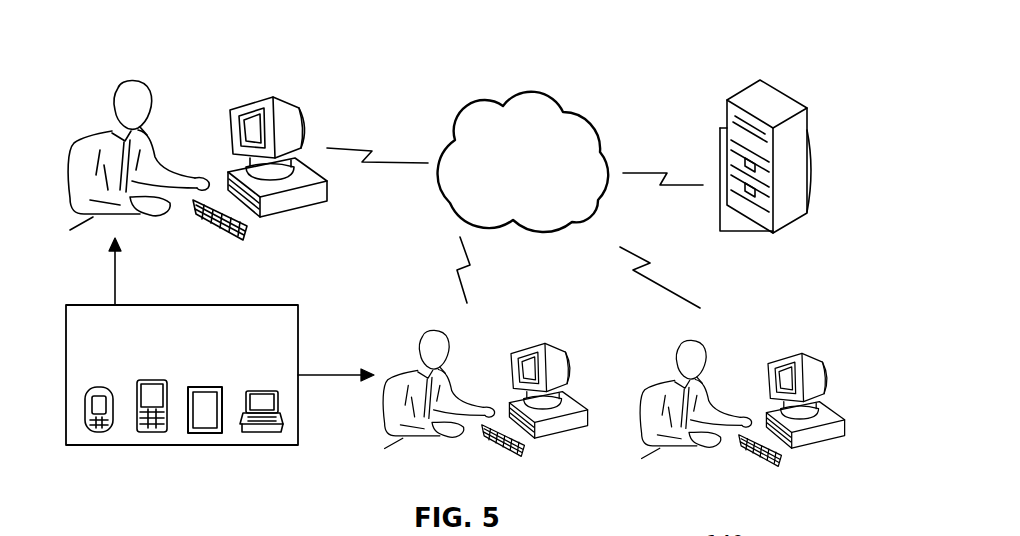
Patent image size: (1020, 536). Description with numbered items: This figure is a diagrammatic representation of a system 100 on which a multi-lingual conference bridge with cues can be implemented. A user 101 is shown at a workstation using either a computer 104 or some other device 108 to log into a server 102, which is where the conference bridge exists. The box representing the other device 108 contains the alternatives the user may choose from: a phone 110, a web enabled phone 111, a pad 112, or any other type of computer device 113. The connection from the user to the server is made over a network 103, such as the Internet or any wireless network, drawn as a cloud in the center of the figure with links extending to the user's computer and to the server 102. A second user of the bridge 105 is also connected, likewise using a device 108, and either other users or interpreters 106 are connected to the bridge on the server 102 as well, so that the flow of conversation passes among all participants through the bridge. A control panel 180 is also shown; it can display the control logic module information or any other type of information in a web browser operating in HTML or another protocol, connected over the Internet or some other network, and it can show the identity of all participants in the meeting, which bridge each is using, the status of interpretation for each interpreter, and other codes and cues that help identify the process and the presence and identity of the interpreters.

The system 100 is at (643, 59).
The user 101 is at (83, 125).
The server 102 is at (778, 90).
The network 103 is at (539, 203).
The computer 104 is at (296, 120).
The second user of the bridge 105 is at (560, 353).
The other users or interpreters 106 is at (825, 365).
The other device 108 is at (147, 305).
The phone 110 is at (88, 388).
The web enabled phone 111 is at (148, 382).
The pad 112 is at (195, 388).
The other type of computer device 113 is at (270, 393).
The control panel 180 is at (252, 100).